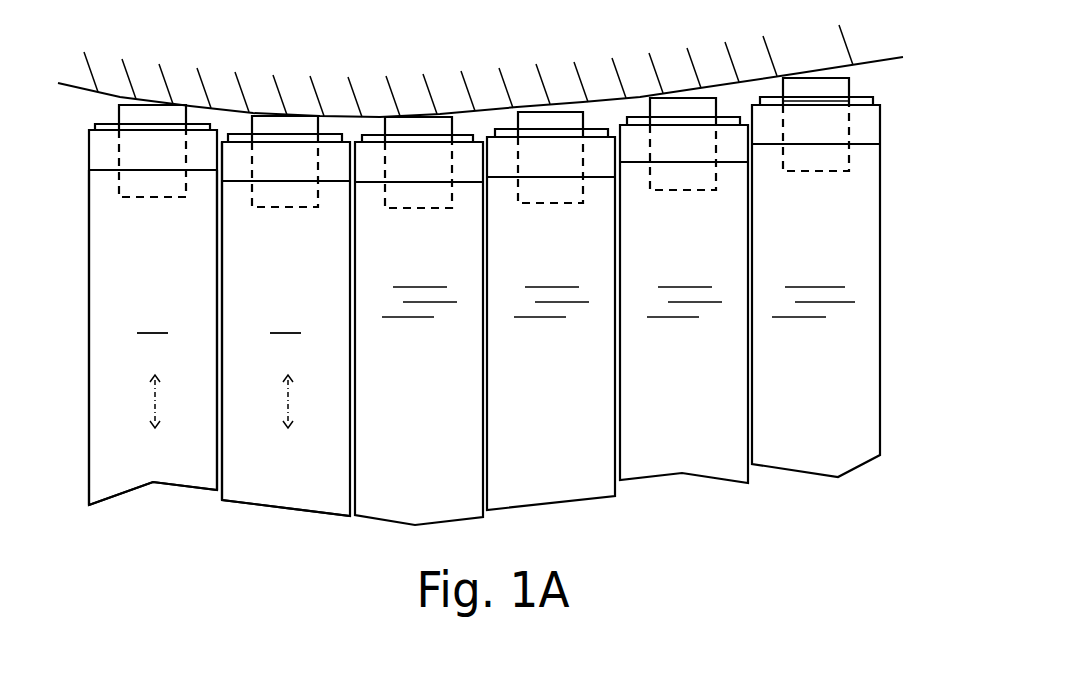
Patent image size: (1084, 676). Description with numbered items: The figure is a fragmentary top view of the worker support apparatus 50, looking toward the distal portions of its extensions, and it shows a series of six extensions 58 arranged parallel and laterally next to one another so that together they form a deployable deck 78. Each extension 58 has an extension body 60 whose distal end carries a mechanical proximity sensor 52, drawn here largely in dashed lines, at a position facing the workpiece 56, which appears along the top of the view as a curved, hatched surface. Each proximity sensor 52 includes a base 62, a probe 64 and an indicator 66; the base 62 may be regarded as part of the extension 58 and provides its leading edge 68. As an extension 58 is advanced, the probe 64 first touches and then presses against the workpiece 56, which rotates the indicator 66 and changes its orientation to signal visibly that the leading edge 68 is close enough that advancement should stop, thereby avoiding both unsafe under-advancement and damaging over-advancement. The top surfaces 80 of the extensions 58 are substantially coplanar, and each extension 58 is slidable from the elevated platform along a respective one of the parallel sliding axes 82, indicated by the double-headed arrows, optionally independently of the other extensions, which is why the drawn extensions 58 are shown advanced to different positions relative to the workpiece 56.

The worker support apparatus 50 is at (155, 605).
The proximity sensor 52 is at (155, 184).
The workpiece 56 is at (83, 91).
The extension 58 is at (197, 499).
The extension body 60 is at (88, 313).
The base 62 is at (882, 133).
The probe 64 is at (850, 85).
The indicator 66 is at (867, 107).
The leading edge 68 is at (815, 101).
The deployable deck 78 is at (182, 546).
The top surfaces 80 is at (219, 318).
The parallel sliding axes 82 is at (156, 397).